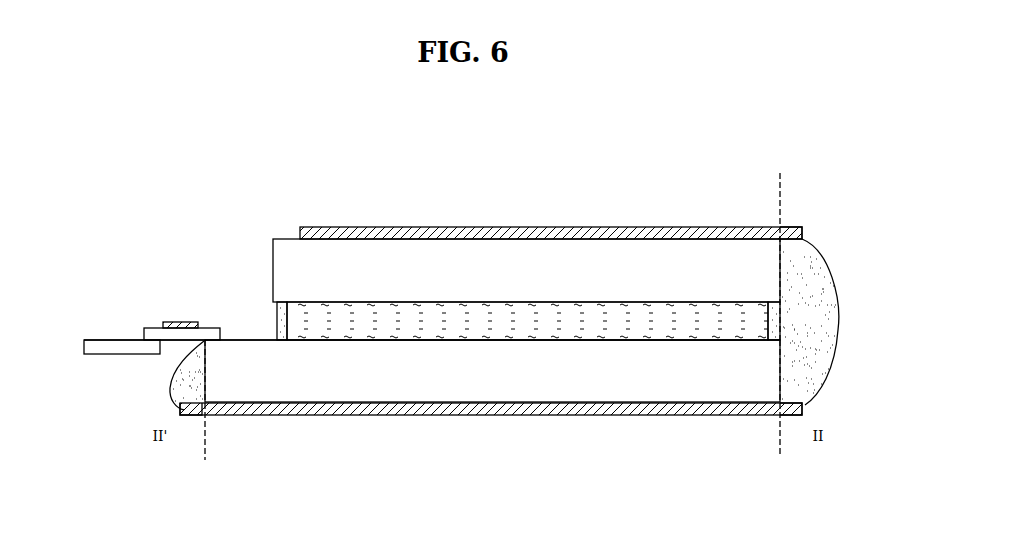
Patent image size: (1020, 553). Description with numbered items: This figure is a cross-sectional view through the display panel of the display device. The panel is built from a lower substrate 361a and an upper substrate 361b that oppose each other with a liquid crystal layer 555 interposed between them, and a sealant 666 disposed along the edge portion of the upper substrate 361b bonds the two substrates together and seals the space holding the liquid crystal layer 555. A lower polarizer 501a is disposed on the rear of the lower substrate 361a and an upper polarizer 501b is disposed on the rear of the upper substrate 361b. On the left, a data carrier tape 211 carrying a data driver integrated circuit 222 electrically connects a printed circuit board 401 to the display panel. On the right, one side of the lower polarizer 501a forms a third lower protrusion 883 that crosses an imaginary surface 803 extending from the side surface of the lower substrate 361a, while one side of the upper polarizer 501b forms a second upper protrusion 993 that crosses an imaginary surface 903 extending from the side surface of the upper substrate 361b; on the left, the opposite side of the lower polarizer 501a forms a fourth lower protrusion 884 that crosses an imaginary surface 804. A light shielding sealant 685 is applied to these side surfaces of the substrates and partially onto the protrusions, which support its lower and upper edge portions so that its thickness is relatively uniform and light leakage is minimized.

The printed circuit board 401 is at (110, 348).
The data driver integrated circuit 222 is at (178, 322).
The data carrier tape 211 is at (213, 330).
The sealant 666 is at (280, 322).
The light shielding sealant 685 is at (817, 260).
The upper polarizer 501b is at (472, 233).
The upper substrate 361b is at (602, 265).
The liquid crystal layer 555 is at (432, 328).
The lower substrate 361a is at (587, 373).
The lower polarizer 501a is at (523, 410).
The imaginary surface 903 is at (780, 203).
The second upper protrusion 993 is at (790, 232).
The third lower protrusion 883 is at (788, 417).
The imaginary surface 803 is at (782, 435).
The imaginary surface 804 is at (204, 443).
The fourth lower protrusion 884 is at (192, 415).